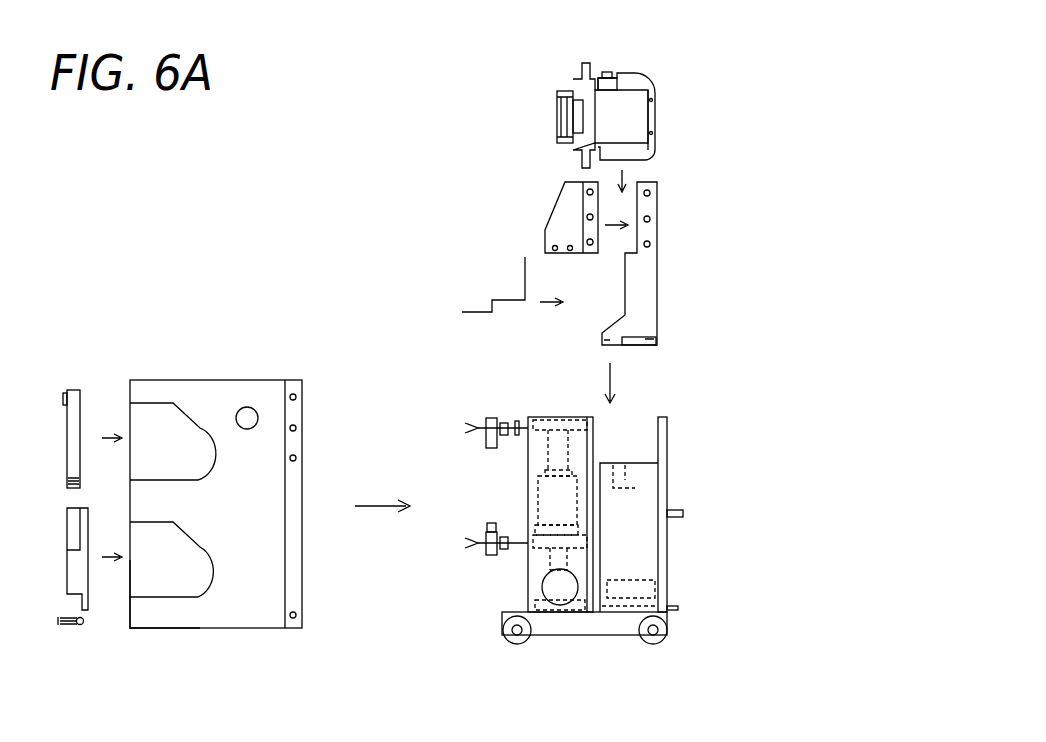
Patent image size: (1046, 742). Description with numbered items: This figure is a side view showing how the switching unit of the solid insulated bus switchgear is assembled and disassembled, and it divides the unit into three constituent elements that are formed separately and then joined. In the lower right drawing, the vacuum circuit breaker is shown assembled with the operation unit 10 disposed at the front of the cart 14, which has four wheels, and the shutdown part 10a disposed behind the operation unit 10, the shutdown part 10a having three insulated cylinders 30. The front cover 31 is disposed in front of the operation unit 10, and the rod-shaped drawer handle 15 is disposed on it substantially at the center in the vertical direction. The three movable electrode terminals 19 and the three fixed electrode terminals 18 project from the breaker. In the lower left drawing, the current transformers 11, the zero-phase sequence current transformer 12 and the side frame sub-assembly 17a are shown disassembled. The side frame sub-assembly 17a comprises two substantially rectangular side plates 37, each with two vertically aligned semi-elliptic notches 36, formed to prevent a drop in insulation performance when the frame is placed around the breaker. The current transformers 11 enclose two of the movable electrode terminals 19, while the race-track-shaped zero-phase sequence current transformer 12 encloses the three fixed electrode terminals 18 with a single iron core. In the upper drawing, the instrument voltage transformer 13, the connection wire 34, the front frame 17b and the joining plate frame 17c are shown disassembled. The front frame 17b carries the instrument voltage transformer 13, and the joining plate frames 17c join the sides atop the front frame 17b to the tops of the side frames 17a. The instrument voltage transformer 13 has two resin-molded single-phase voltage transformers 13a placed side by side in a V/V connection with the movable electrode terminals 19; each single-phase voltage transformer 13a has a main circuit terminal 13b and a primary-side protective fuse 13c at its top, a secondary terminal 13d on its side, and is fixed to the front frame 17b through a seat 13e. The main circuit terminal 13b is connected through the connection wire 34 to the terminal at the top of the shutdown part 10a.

The operation unit 10 is at (595, 534).
The shutdown part 10a is at (541, 590).
The current transformer 11 is at (67, 418).
The zero-phase sequence current transformer 12 is at (67, 534).
The instrument voltage transformer 13 is at (617, 94).
The single-phase voltage transformer 13a is at (635, 108).
The main circuit terminal 13b is at (576, 150).
The primary-side protective fuse 13c is at (557, 108).
The secondary terminal 13d is at (605, 72).
The seat 13e is at (655, 132).
The cart 14 is at (610, 634).
The drawer handle 15 is at (685, 513).
The side frame sub-assembly 17a is at (215, 517).
The front frame 17b is at (663, 263).
The joining plate frame 17c is at (545, 232).
The fixed electrode terminal 18 is at (513, 540).
The movable electrode terminal 19 is at (517, 425).
The insulated cylinder 30 is at (645, 320).
The front cover 31 is at (668, 496).
The connection wire 34 is at (490, 300).
The notch 36 is at (192, 418).
The side plate 37 is at (143, 620).